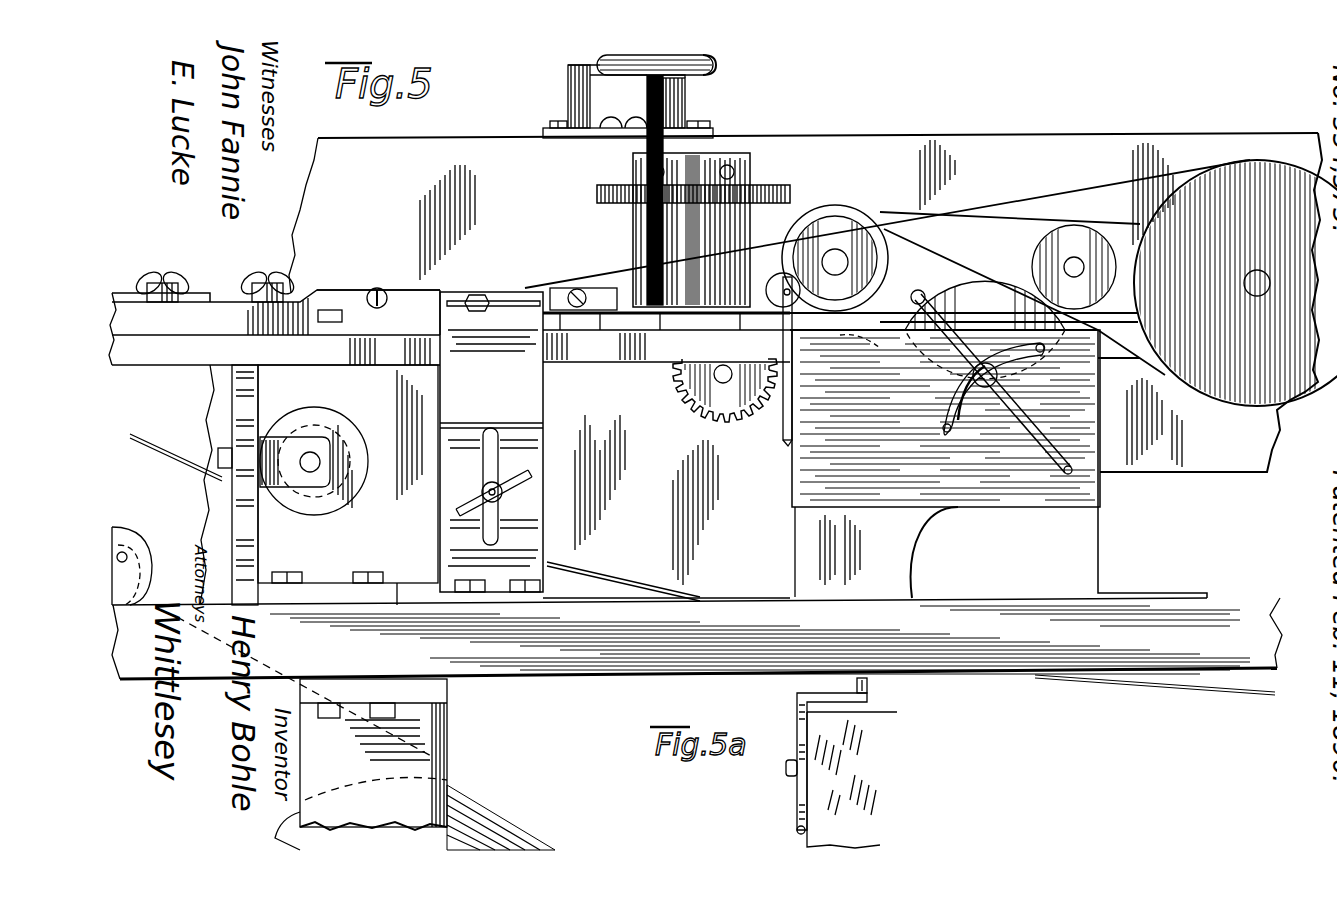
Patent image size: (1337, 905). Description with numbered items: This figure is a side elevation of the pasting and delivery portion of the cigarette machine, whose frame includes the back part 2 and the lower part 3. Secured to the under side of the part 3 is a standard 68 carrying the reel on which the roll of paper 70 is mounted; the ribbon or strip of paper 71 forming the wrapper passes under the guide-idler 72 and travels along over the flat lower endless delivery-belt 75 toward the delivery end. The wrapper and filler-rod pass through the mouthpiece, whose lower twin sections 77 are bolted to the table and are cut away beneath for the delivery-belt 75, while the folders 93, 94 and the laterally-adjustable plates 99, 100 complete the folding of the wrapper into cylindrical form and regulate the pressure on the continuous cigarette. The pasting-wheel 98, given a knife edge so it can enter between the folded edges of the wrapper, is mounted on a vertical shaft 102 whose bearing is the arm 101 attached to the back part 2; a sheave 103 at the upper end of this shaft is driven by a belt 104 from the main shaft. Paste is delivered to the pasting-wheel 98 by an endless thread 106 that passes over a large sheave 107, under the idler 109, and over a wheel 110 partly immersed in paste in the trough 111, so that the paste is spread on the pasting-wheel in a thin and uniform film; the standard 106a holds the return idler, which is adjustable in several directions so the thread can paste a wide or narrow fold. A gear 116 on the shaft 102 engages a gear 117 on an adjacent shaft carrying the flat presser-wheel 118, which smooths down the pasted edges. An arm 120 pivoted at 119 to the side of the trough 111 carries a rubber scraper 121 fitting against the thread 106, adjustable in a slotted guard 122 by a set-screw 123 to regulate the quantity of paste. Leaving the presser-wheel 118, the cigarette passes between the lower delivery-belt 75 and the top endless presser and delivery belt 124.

In FIG. 5, the back part of the frame 2 is at (761, 369).
In FIG. 5, the part of the frame 3 is at (697, 646).
In FIG. 5, the standard 68 is at (448, 758).
In FIG. 5, the roll of paper 70 is at (537, 833).
In FIG. 5, the ribbon or strip of paper 71 is at (170, 606).
In FIG. 5, the guide-idler 72 is at (206, 485).
In FIG. 5, the lower endless delivery-belt 75 is at (627, 578).
In FIG. 5, the lower twin sections of the mouthpiece 77 is at (274, 316).
In FIG. 5, the folder 93 is at (366, 291).
In FIG. 5, the folder 94 is at (431, 291).
In FIG. 5, the pasting-wheel 98 is at (683, 314).
In FIG. 5, the laterally-adjustable plate 99 is at (181, 454).
In FIG. 5, the laterally-adjustable plate 100 is at (584, 299).
In FIG. 5, the arm 101 is at (636, 150).
In FIG. 5, the vertical shaft 102 is at (646, 124).
In FIG. 5, the sheave 103 is at (708, 58).
In FIG. 5, the belt 104 is at (716, 70).
In FIG. 5, the endless thread 106 is at (1093, 183).
In FIG. 5, the standard 106a is at (491, 442).
In FIG. 5, the large sheave 107 is at (1235, 283).
In FIG. 5, the idler 109 is at (780, 282).
In FIG. 5, the wheel 110 is at (1010, 302).
In FIG. 5, the trough 111 is at (999, 464).
In FIG. 5A, the trough 111 is at (852, 780).
In FIG. 5, the gear 116 is at (597, 203).
In FIG. 5, the gear 117 is at (783, 186).
In FIG. 5, the flat presser-wheel 118 is at (725, 379).
In FIG. 5, the pivot 119 is at (1063, 473).
In FIG. 5A, the pivot 119 is at (797, 831).
In FIG. 5, the arm 120 is at (1036, 432).
In FIG. 5A, the arm 120 is at (800, 710).
In FIG. 5, the scraper 121 is at (945, 325).
In FIG. 5A, the scraper 121 is at (868, 690).
In FIG. 5, the slotted guard 122 is at (1000, 460).
In FIG. 5, the set-screw 123 is at (998, 378).
In FIG. 5A, the set-screw 123 is at (786, 774).
In FIG. 5, the top endless presser and delivery belt 124 is at (1004, 226).